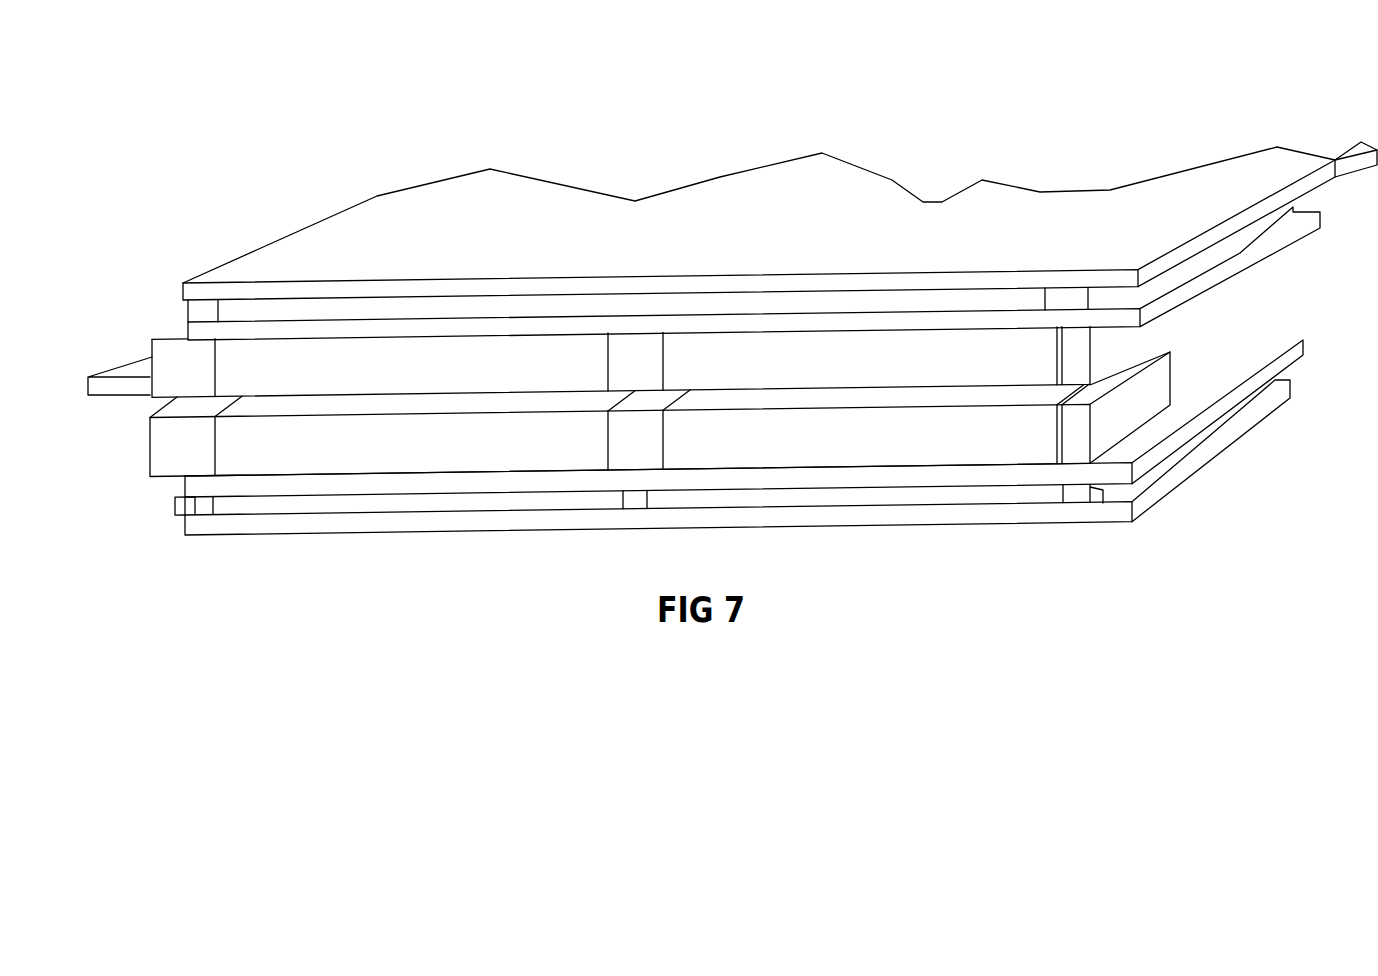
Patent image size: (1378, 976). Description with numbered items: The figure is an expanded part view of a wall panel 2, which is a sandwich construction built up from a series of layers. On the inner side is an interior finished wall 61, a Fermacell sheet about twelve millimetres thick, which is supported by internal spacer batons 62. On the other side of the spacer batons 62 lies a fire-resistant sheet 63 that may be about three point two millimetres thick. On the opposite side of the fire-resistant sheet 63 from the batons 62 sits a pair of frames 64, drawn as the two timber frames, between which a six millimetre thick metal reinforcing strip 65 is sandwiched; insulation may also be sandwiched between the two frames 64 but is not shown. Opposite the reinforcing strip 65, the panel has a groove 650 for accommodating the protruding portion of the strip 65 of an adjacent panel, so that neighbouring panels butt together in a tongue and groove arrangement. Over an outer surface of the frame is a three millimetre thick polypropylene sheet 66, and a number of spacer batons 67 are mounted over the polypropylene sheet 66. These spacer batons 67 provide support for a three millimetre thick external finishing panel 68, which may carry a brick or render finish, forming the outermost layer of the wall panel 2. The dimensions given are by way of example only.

The wall panel 2 is at (250, 225).
The interior finished wall 61 is at (1113, 526).
The internal spacer batons 62 is at (1103, 490).
The fire-resistant sheet 63 is at (1230, 400).
The frames 64 is at (162, 452).
The metal reinforcing strip 65 is at (125, 375).
The polypropylene sheet 66 is at (1248, 268).
The spacer batons 67 is at (188, 310).
The external finishing panel 68 is at (1057, 218).
The groove 650 is at (1137, 358).